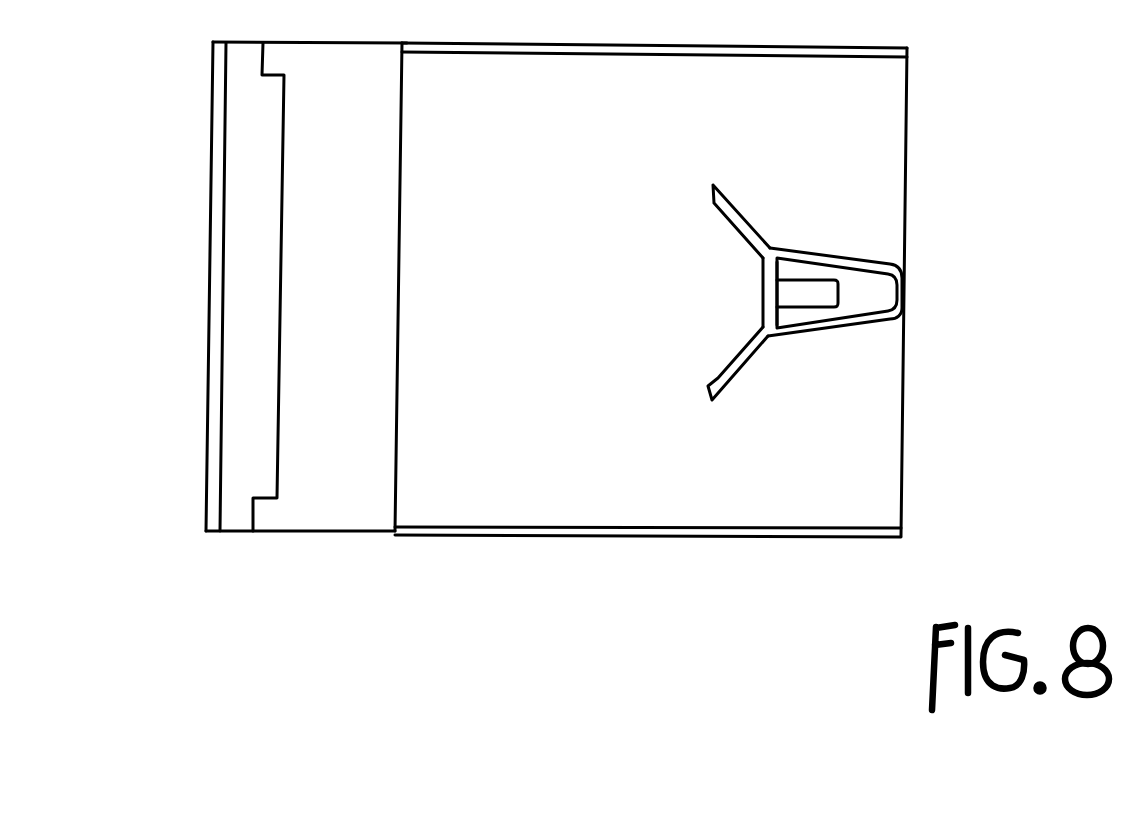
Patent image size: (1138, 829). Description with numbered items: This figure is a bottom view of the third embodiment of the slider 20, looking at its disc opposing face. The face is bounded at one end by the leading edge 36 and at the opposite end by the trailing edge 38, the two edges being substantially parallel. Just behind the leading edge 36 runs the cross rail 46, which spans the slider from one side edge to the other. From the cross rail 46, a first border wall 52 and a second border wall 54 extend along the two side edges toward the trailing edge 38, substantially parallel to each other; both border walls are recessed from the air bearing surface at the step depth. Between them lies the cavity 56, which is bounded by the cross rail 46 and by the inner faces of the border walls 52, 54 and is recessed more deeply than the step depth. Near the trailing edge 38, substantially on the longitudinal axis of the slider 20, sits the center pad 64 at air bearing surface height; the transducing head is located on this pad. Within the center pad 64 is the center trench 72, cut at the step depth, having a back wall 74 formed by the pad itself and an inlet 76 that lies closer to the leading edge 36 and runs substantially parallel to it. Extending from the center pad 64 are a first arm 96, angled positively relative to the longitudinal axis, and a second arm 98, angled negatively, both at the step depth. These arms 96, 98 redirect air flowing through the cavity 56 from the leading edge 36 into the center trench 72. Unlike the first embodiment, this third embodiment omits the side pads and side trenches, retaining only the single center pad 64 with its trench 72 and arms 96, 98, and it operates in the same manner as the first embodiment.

The slider 20 is at (982, 185).
The leading edge 36 is at (210, 232).
The trailing edge 38 is at (901, 405).
The cross rail 46 is at (396, 547).
The first border wall 52 is at (613, 50).
The second border wall 54 is at (676, 540).
The cavity 56 is at (497, 505).
The center pad 64 is at (887, 280).
The center trench 72 is at (800, 290).
The back wall 74 is at (842, 295).
The inlet 76 is at (782, 292).
The first arm 96 is at (717, 211).
The second arm 98 is at (722, 373).